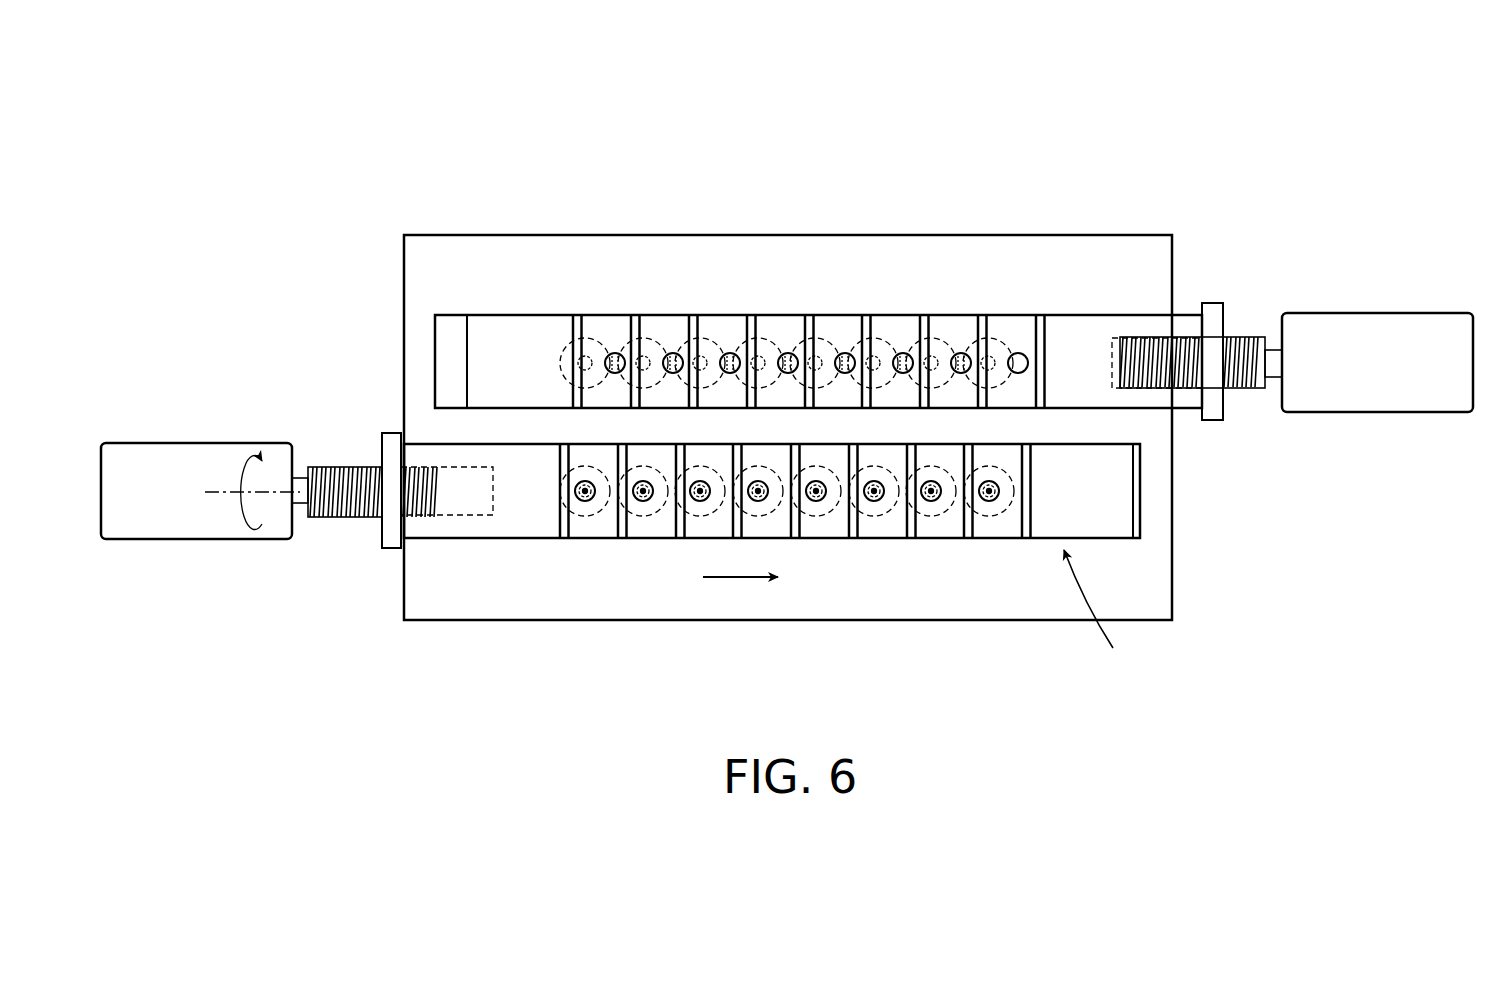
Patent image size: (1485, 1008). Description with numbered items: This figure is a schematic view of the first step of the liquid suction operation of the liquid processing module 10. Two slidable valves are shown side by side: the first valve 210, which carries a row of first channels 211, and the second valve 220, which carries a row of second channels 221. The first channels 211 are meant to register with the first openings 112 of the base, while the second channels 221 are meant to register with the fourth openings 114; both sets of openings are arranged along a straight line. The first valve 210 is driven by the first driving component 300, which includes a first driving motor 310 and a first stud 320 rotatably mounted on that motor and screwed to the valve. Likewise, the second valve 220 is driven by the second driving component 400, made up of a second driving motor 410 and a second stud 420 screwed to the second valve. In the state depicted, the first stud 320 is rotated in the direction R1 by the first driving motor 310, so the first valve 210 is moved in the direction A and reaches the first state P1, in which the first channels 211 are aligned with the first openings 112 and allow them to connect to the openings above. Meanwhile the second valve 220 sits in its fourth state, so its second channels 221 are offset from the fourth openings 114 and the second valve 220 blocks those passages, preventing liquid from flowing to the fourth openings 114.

The liquid processing module 10 is at (722, 218).
The first openings 112 is at (597, 513).
The fourth openings 114 is at (970, 347).
The first valve 210 is at (512, 517).
The first channels 211 is at (584, 503).
The second valve 220 is at (1087, 350).
The second channels 221 is at (1021, 348).
The first driving component 300 is at (269, 540).
The first driving motor 310 is at (205, 520).
The first stud 320 is at (364, 519).
The second driving component 400 is at (1296, 313).
The second driving motor 410 is at (1377, 330).
The second stud 420 is at (1245, 340).
The direction R1 is at (250, 493).
The direction A is at (740, 592).
The first state P1 is at (1096, 614).